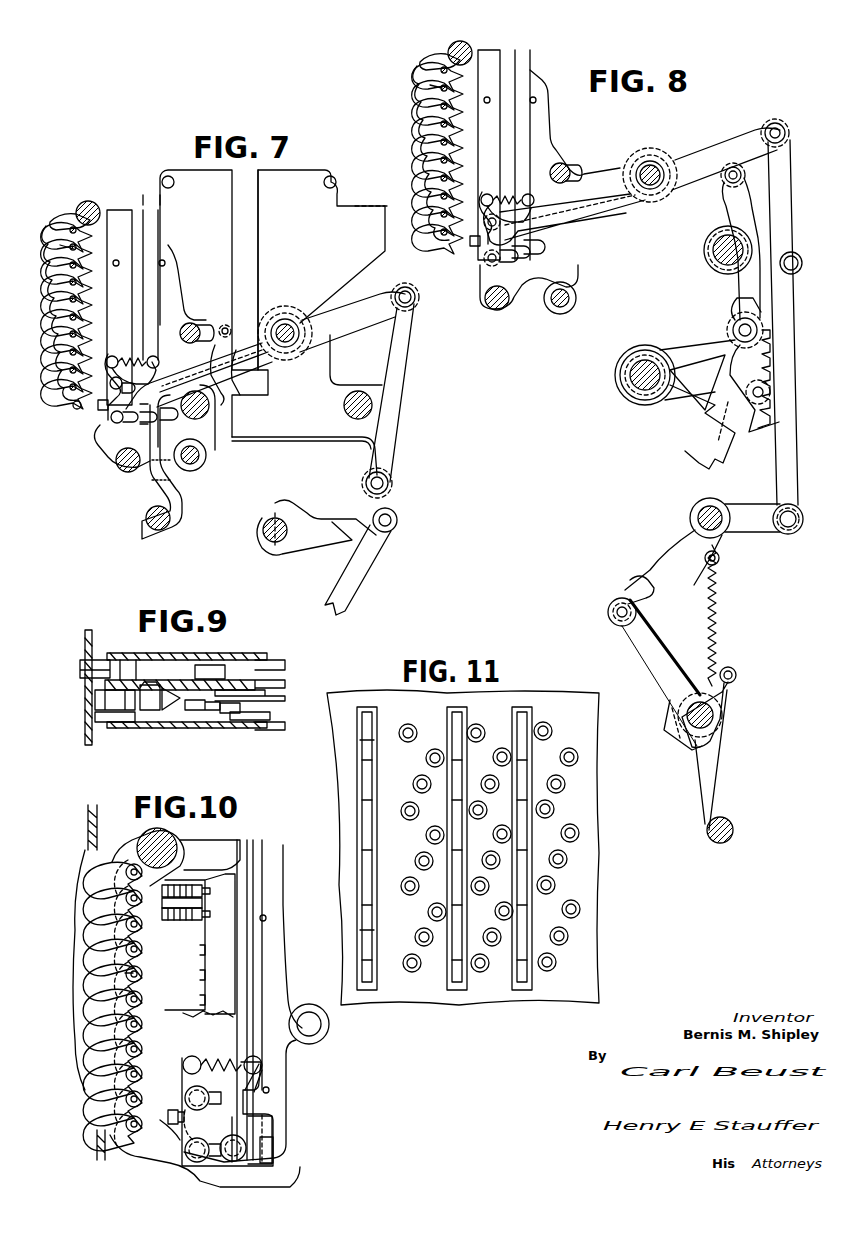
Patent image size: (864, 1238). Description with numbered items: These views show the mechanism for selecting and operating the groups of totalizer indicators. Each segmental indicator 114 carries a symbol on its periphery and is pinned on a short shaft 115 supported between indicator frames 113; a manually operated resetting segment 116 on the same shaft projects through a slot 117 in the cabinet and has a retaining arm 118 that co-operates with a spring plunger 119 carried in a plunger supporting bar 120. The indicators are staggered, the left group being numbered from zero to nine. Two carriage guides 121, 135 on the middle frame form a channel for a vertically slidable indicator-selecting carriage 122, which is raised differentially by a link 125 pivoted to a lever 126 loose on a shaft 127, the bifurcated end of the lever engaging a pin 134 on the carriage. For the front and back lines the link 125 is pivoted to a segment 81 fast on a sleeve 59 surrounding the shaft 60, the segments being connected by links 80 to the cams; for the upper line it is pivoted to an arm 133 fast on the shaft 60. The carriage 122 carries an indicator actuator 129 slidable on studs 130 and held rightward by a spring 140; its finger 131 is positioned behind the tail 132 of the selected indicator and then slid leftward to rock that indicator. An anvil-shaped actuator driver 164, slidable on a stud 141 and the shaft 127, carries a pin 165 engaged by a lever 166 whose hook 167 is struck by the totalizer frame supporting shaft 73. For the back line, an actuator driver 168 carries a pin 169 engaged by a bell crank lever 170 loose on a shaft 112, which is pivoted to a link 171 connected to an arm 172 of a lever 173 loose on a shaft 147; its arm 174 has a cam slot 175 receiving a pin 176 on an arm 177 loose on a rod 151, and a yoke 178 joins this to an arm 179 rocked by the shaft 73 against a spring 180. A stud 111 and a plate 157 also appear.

In FIG. 8, the sleeve 59 is at (655, 364).
In FIG. 7, the shaft 60 is at (286, 533).
In FIG. 8, the shaft 60 is at (658, 384).
In FIG. 7, the totalizer frame supporting shaft 73 is at (148, 513).
In FIG. 8, the totalizer frame supporting shaft 73 is at (731, 826).
In FIG. 7, the link 80 is at (348, 564).
In FIG. 8, the link 80 is at (716, 432).
In FIG. 8, the segment 81 is at (706, 339).
In FIG. 7, the pivot stud 111 is at (204, 439).
In FIG. 8, the pivot stud 111 is at (576, 298).
In FIG. 7, the shaft 112 is at (345, 406).
In FIG. 8, the shaft 112 is at (712, 247).
In FIG. 9, the indicator frame 113 is at (260, 722).
In FIG. 7, the segmental indicator 114 is at (65, 234).
In FIG. 8, the segmental indicator 114 is at (414, 114).
In FIG. 9, the segmental indicator 114 is at (95, 708).
In FIG. 10, the segmental indicator 114 is at (106, 938).
In FIG. 11, the segmental indicator 114 is at (430, 835).
In FIG. 7, the shaft 115 is at (75, 246).
In FIG. 8, the shaft 115 is at (432, 88).
In FIG. 9, the shaft 115 is at (132, 728).
In FIG. 10, the shaft 115 is at (127, 973).
In FIG. 7, the indicator resetting segment 116 is at (56, 215).
In FIG. 8, the indicator resetting segment 116 is at (416, 62).
In FIG. 9, the indicator resetting segment 116 is at (80, 669).
In FIG. 10, the indicator resetting segment 116 is at (88, 896).
In FIG. 11, the indicator resetting segment 116 is at (383, 714).
In FIG. 11, the slot 117 is at (460, 713).
In FIG. 9, the retaining arm 118 is at (132, 656).
In FIG. 9, the spring plunger 119 is at (197, 669).
In FIG. 10, the spring plunger 119 is at (195, 901).
In FIG. 9, the plunger supporting bar 120 is at (179, 653).
In FIG. 10, the plunger supporting bar 120 is at (198, 958).
In FIG. 7, the carriage guide 121 is at (148, 210).
In FIG. 8, the carriage guide 121 is at (520, 50).
In FIG. 9, the carriage guide 121 is at (256, 692).
In FIG. 10, the carriage guide 121 is at (242, 844).
In FIG. 7, the indicator-selecting carriage 122 is at (156, 372).
In FIG. 8, the indicator-selecting carriage 122 is at (564, 219).
In FIG. 9, the indicator-selecting carriage 122 is at (224, 721).
In FIG. 10, the indicator-selecting carriage 122 is at (250, 1090).
In FIG. 7, the link 125 is at (398, 362).
In FIG. 7, the lever 126 is at (343, 315).
In FIG. 8, the lever 126 is at (722, 130).
In FIG. 7, the shaft 127 is at (286, 328).
In FIG. 8, the shaft 127 is at (645, 168).
In FIG. 7, the indicator actuator 129 is at (113, 406).
In FIG. 8, the indicator actuator 129 is at (479, 266).
In FIG. 9, the indicator actuator 129 is at (212, 721).
In FIG. 10, the indicator actuator 129 is at (275, 1128).
In FIG. 10, the stud 130 is at (202, 1114).
In FIG. 7, the finger 131 is at (114, 355).
In FIG. 8, the finger 131 is at (470, 240).
In FIG. 9, the finger 131 is at (168, 723).
In FIG. 10, the finger 131 is at (165, 1135).
In FIG. 9, the tail 132 is at (152, 684).
In FIG. 10, the tail 132 is at (162, 1122).
In FIG. 7, the arm 133 is at (328, 517).
In FIG. 7, the pin 134 is at (122, 448).
In FIG. 8, the pin 134 is at (508, 260).
In FIG. 9, the pin 134 is at (254, 719).
In FIG. 10, the pin 134 is at (243, 1165).
In FIG. 7, the carriage guide 135 is at (114, 208).
In FIG. 8, the carriage guide 135 is at (492, 49).
In FIG. 9, the carriage guide 135 is at (214, 675).
In FIG. 10, the carriage guide 135 is at (212, 844).
In FIG. 10, the spring 140 is at (212, 1046).
In FIG. 7, the stud 141 is at (189, 324).
In FIG. 8, the stud 141 is at (560, 166).
In FIG. 10, the stud 141 is at (308, 1036).
In FIG. 8, the shaft 147 is at (721, 518).
In FIG. 8, the rod 151 is at (717, 715).
In FIG. 10, the plate 157 is at (276, 1155).
In FIG. 7, the indicator actuator driver 164 is at (176, 275).
In FIG. 7, the pin 165 is at (225, 326).
In FIG. 7, the lever 166 is at (212, 408).
In FIG. 7, the hook 167 is at (180, 516).
In FIG. 8, the actuator driver 168 is at (551, 114).
In FIG. 8, the pin 169 is at (733, 170).
In FIG. 8, the bell crank lever 170 is at (728, 210).
In FIG. 8, the link 171 is at (792, 334).
In FIG. 8, the arm 172 is at (762, 538).
In FIG. 8, the lever 173 is at (696, 500).
In FIG. 8, the arm 174 is at (665, 557).
In FIG. 8, the cam slot 175 is at (629, 584).
In FIG. 8, the pin 176 is at (612, 620).
In FIG. 8, the arm 177 is at (654, 645).
In FIG. 8, the yoke 178 is at (664, 732).
In FIG. 8, the arm 179 is at (718, 770).
In FIG. 8, the spring 180 is at (724, 620).